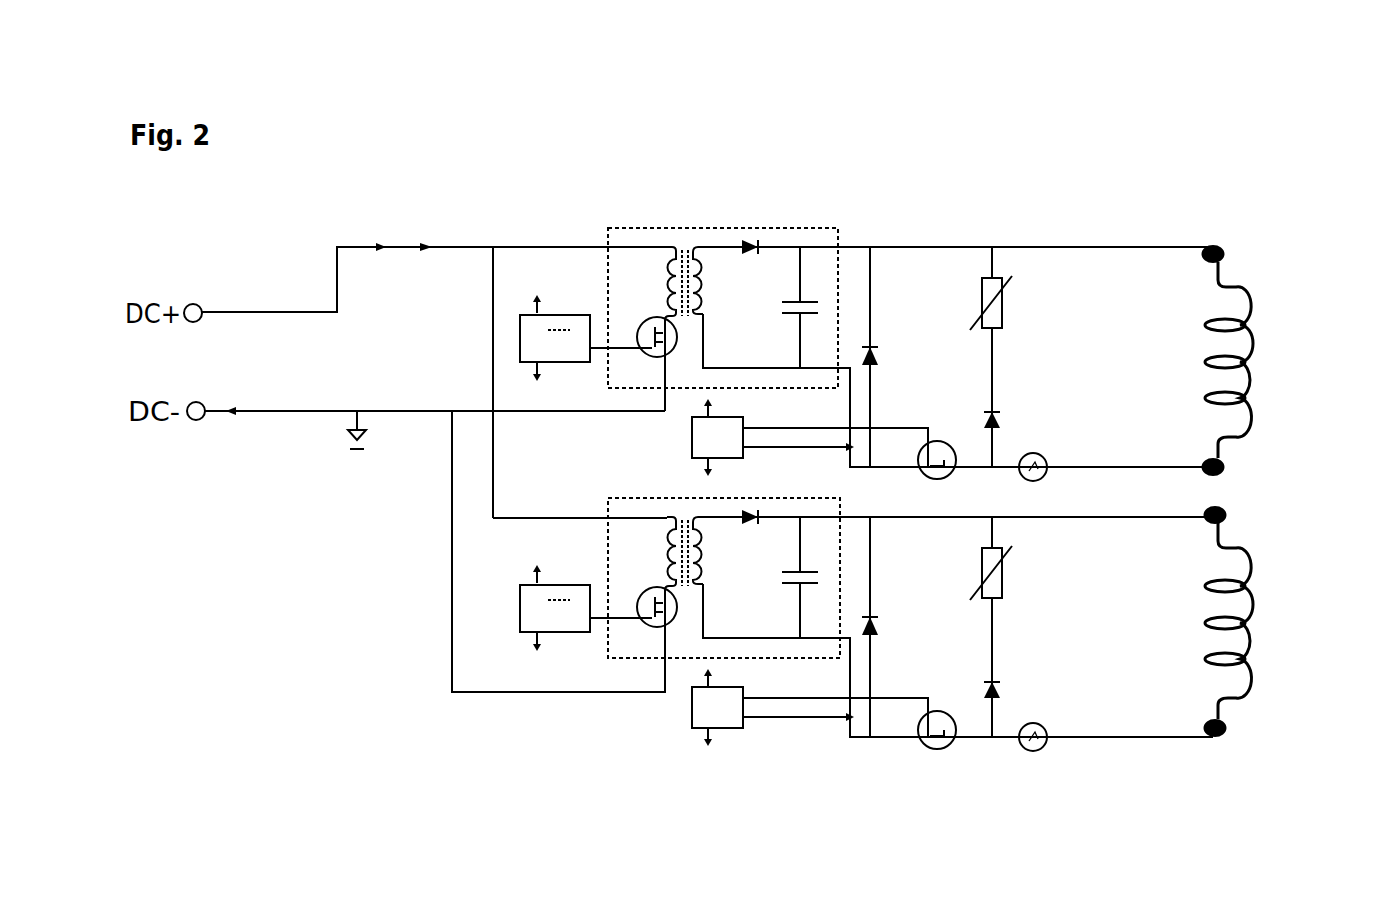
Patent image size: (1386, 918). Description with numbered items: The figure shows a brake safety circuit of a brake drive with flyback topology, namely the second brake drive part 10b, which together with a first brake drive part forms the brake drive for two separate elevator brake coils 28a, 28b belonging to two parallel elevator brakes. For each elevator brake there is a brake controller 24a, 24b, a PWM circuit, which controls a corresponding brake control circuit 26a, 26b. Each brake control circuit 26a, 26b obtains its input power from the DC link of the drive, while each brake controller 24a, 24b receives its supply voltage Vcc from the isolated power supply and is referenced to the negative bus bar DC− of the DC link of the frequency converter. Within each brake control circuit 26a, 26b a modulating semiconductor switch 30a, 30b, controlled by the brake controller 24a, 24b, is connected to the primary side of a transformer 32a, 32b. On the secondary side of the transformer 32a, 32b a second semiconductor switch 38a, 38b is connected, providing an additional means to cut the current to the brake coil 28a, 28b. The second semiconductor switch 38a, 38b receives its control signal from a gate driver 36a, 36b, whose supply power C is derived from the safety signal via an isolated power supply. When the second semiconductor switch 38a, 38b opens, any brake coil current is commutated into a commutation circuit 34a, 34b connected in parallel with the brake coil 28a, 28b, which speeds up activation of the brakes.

The second brake drive part 10b is at (659, 106).
The brake controller 24a is at (548, 336).
The brake controller 24b is at (448, 650).
The brake control circuit 26a is at (864, 182).
The brake control circuit 26b is at (667, 686).
The elevator brake coil 28a is at (1247, 287).
The elevator brake coil 28b is at (1267, 596).
The modulating semiconductor switch 30a is at (659, 336).
The modulating semiconductor switch 30b is at (628, 698).
The transformer 32a is at (688, 262).
The transformer 32b is at (739, 648).
The commutation circuit 34a is at (1028, 335).
The commutation circuit 34b is at (1072, 662).
The gate driver 36a is at (723, 437).
The gate driver 36b is at (753, 781).
The second semiconductor switch 38a is at (937, 460).
The second semiconductor switch 38b is at (988, 797).